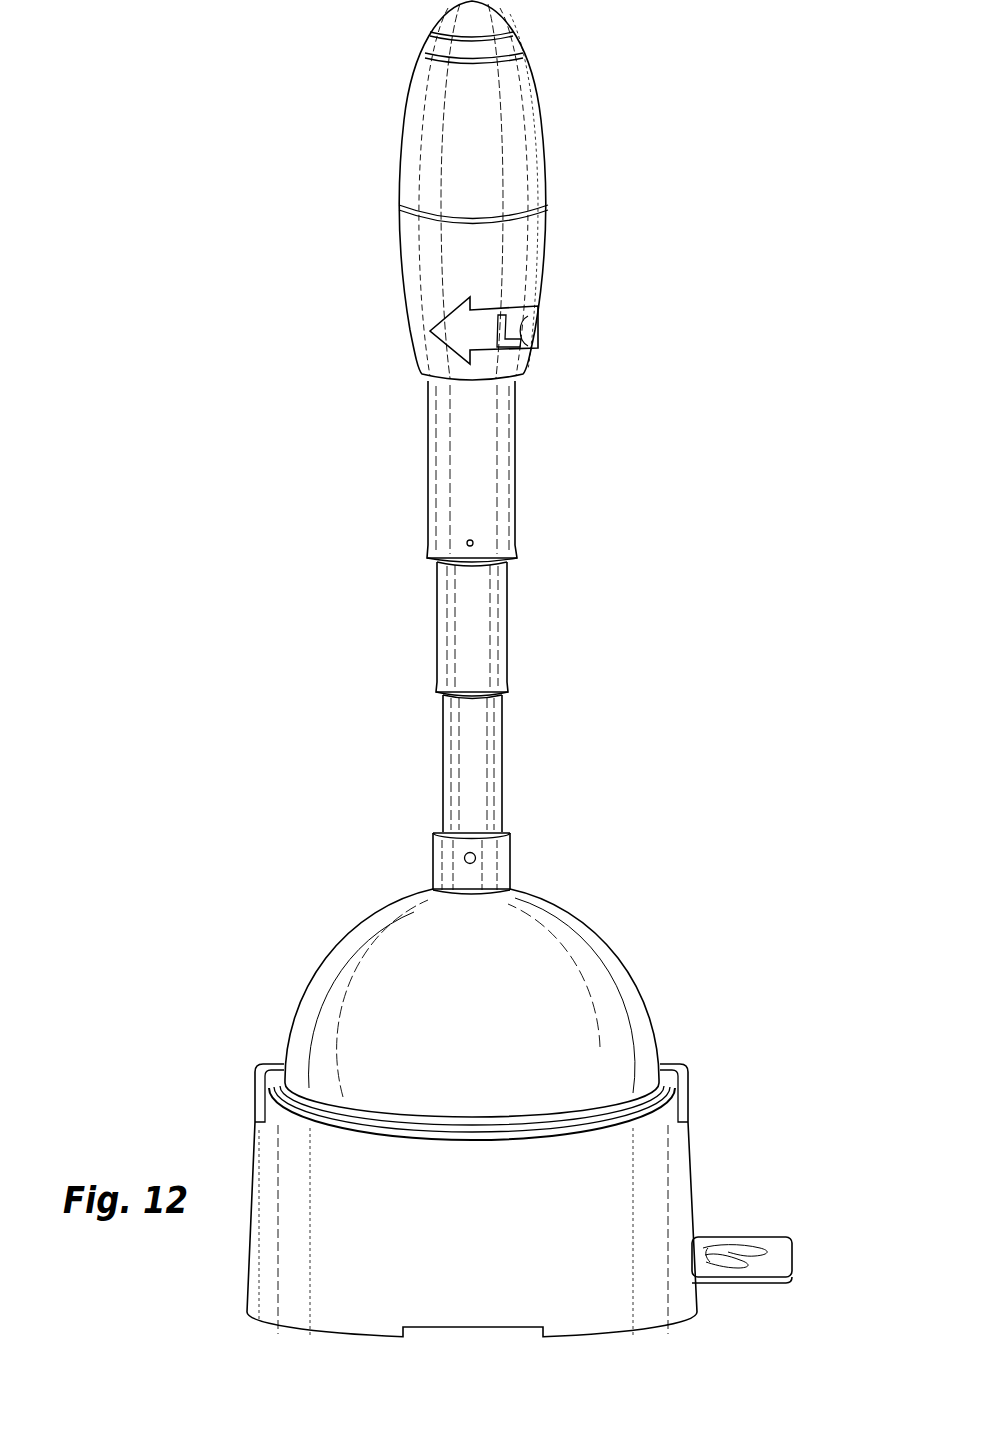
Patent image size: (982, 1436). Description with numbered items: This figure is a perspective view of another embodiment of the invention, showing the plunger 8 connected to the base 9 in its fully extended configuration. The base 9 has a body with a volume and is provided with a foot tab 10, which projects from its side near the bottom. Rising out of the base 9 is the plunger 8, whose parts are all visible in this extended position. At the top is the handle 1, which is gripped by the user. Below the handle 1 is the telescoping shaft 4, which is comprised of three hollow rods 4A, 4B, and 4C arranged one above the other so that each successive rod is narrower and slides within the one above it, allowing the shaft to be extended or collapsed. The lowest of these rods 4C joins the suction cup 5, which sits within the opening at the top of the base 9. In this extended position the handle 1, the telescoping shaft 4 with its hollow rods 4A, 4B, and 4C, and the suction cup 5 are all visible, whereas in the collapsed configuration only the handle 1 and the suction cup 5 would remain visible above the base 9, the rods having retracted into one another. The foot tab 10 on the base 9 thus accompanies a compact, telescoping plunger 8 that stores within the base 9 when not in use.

The handle 1 is at (402, 122).
The telescoping shaft 4 is at (563, 587).
The hollow rod 4A is at (427, 477).
The hollow rod 4B is at (437, 632).
The hollow rod 4C is at (443, 771).
The suction cup 5 is at (336, 953).
The plunger 8 is at (775, 272).
The base 9 is at (572, 1297).
The foot tab 10 is at (757, 1237).